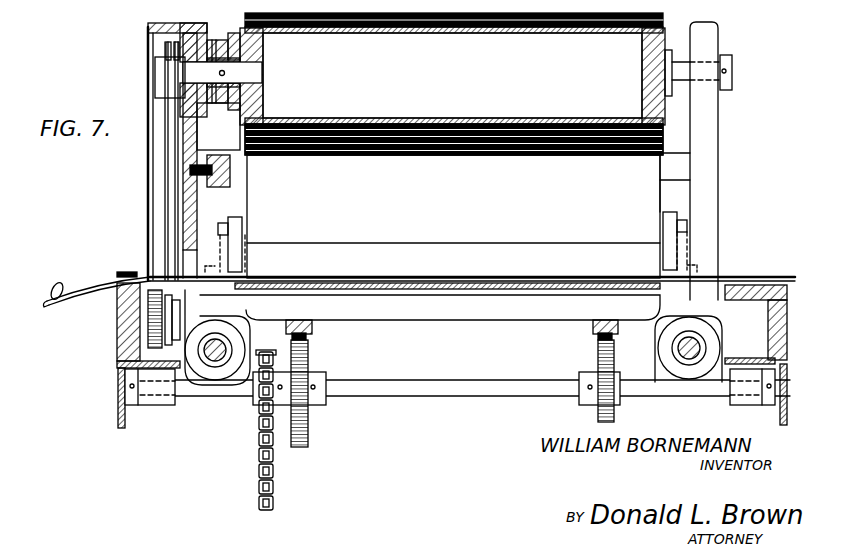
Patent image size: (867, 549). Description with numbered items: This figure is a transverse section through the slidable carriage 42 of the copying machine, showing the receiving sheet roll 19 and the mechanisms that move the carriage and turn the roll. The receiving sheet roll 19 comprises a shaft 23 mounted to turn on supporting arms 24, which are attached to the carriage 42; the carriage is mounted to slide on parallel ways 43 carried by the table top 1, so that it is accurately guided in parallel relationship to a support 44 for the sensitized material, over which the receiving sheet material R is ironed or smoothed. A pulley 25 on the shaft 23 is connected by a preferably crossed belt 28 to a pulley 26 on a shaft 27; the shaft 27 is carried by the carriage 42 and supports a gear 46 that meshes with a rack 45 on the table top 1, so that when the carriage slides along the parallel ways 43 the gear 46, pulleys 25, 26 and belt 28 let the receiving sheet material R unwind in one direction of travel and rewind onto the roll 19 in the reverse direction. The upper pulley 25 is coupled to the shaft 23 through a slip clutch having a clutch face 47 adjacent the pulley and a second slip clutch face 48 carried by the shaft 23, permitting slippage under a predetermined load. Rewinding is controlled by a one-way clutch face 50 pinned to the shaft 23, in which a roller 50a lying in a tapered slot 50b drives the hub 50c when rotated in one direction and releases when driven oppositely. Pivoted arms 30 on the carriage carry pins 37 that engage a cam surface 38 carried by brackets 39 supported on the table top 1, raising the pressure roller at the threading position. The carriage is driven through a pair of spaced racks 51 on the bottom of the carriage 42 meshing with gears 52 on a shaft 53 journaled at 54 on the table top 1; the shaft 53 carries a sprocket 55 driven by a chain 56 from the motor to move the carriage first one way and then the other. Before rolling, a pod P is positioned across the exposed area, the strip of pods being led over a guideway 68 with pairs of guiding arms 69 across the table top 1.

The table top 1 is at (125, 305).
The receiving sheet roll 19 is at (540, 155).
The shaft 23 is at (190, 73).
The supporting arms 24 is at (200, 142).
The pulley 25 is at (160, 97).
The pulley 26 is at (118, 364).
The shaft 27 is at (128, 328).
The belt 28 is at (167, 164).
The arms 30 is at (242, 228).
The pins 37 is at (220, 227).
The cam surface 38 is at (236, 217).
The brackets 39 is at (690, 248).
The carriage 42 is at (430, 307).
The parallel ways 43 is at (216, 361).
The support 44 is at (410, 289).
The rack 45 is at (151, 290).
The gear 46 is at (152, 343).
The clutch face 47 is at (166, 47).
The slip clutch face 48 is at (212, 44).
The one-way clutch face 50 is at (222, 40).
The roller 50a is at (266, 42).
The tapered slot 50b is at (266, 48).
The hub 50c is at (266, 97).
The racks 51 is at (312, 329).
The gears 52 is at (309, 353).
The shaft 53 is at (426, 383).
The journals 54 is at (150, 405).
The sprocket 55 is at (264, 350).
The chain 56 is at (259, 456).
The guideway 68 is at (47, 304).
The guiding arms 69 is at (57, 282).
The pod P is at (76, 281).
The receiving sheet material R is at (454, 145).